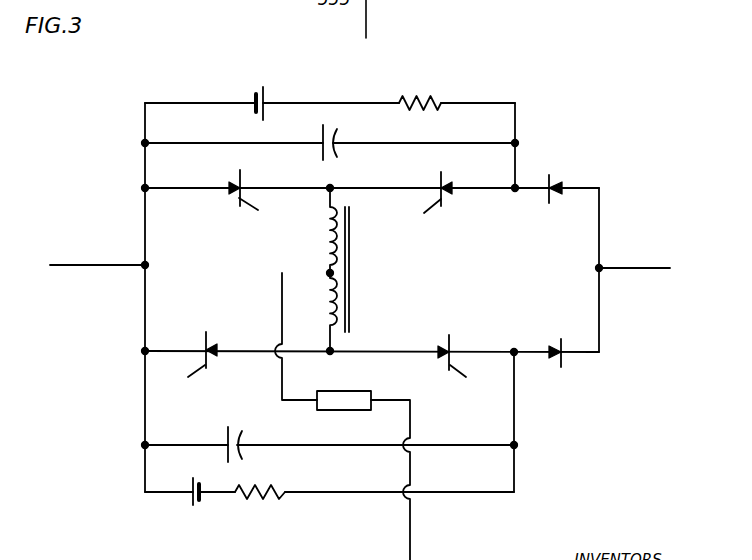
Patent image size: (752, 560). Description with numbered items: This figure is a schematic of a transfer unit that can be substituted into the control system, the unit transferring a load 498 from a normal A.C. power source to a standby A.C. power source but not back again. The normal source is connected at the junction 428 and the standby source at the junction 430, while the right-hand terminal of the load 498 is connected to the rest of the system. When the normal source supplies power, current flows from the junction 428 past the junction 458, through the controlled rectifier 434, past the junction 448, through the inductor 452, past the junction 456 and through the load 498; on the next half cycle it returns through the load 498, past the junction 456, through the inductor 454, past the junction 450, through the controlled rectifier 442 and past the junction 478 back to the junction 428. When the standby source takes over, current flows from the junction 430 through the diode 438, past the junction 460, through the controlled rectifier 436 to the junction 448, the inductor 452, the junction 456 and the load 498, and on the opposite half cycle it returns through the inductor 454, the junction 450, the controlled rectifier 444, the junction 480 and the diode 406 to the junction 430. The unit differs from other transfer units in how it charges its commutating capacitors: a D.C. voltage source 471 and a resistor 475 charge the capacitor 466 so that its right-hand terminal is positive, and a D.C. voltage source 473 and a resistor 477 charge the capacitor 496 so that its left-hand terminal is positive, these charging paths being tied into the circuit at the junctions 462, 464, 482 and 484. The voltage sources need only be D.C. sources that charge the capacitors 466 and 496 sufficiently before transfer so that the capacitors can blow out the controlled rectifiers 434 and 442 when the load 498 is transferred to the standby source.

The diode 406 is at (570, 361).
The junction 428 is at (142, 268).
The junction 430 is at (604, 273).
The controlled rectifier 434 is at (236, 194).
The controlled rectifier 436 is at (447, 198).
The diode 438 is at (563, 186).
The controlled rectifier 442 is at (205, 336).
The controlled rectifier 444 is at (452, 347).
The junction 448 is at (334, 185).
The junction 450 is at (334, 355).
The inductor 452 is at (328, 236).
The inductor 454 is at (327, 312).
The junction 456 is at (327, 276).
The junction 458 is at (142, 188).
The junction 460 is at (516, 194).
The junction 462 is at (142, 143).
The junction 464 is at (520, 141).
The capacitor 466 is at (340, 142).
The voltage source 471 is at (254, 87).
The voltage source 473 is at (187, 500).
The resistor 475 is at (441, 100).
The resistor 477 is at (258, 500).
The junction 478 is at (142, 352).
The junction 480 is at (517, 348).
The junction 482 is at (142, 446).
The junction 484 is at (522, 446).
The capacitor 496 is at (240, 441).
The load 498 is at (336, 412).